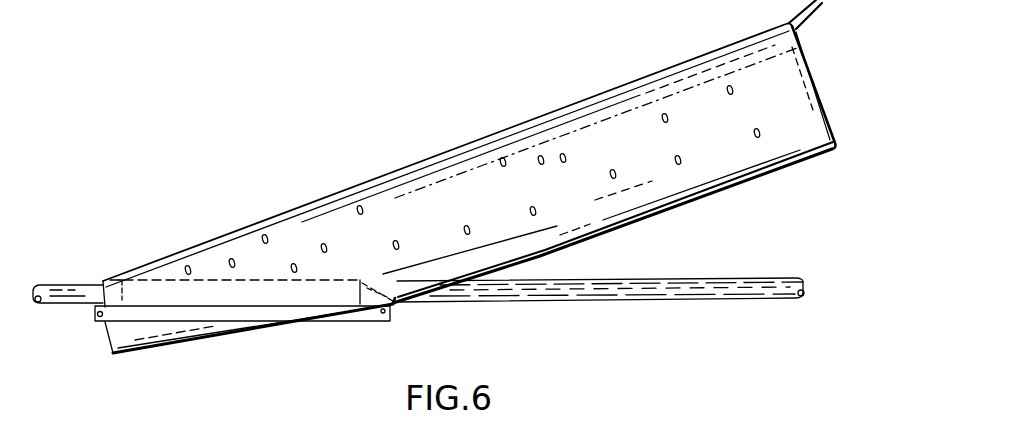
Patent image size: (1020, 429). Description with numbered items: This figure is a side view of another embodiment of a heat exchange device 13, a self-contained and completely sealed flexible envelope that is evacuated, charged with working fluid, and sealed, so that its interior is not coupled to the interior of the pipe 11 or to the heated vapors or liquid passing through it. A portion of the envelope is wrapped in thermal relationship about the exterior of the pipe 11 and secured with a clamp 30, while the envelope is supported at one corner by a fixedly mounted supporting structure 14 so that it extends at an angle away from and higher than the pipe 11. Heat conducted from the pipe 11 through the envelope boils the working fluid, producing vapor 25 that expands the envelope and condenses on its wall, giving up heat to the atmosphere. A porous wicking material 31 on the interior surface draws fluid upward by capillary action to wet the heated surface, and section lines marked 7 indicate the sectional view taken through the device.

The section line 7- 7 is at (167, 243).
The pipe 11 is at (690, 291).
The heat exchange device 13 is at (442, 137).
The supporting structure 14 is at (752, 22).
The vapor 25 is at (541, 157).
The clamp 30 is at (360, 313).
The porous wicking material 31 is at (400, 305).